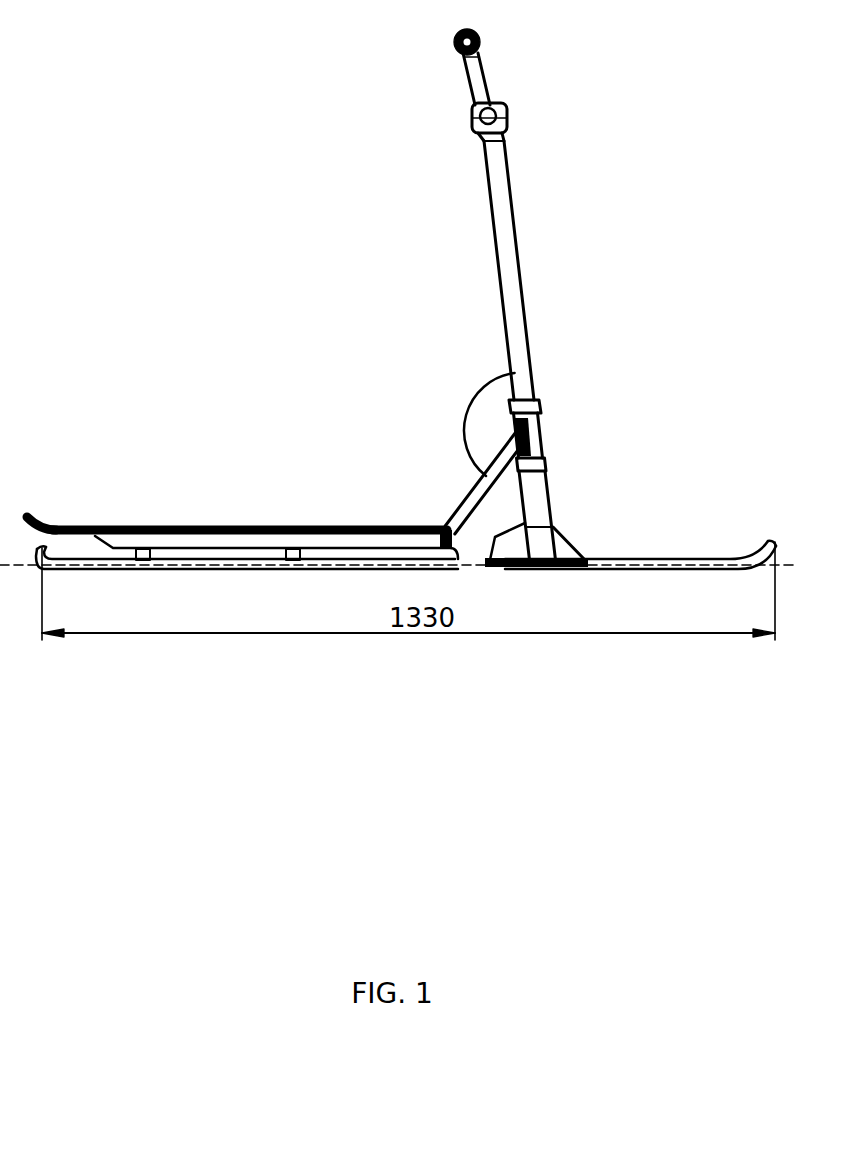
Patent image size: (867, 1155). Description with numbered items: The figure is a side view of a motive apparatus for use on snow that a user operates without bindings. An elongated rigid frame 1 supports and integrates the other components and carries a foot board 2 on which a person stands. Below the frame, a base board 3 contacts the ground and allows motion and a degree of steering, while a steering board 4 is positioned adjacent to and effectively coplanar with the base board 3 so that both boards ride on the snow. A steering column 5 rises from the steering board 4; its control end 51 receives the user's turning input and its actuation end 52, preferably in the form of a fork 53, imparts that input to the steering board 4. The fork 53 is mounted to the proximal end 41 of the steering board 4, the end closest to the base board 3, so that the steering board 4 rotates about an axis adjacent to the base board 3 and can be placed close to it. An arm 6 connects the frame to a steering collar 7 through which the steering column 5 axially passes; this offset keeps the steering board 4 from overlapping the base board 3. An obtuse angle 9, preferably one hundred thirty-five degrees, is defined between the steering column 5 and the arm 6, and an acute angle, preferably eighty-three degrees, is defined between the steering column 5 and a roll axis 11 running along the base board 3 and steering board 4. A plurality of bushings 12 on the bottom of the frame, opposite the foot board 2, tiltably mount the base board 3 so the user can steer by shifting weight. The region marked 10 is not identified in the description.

The elongated rigid frame 1 is at (240, 541).
The foot board 2 is at (78, 528).
The base board 3 is at (78, 571).
The steering board 4 is at (720, 562).
The steering column 5 is at (510, 276).
The arm 6 is at (470, 500).
The steering collar 7 is at (535, 436).
The obtuse angle 9 is at (505, 377).
The pole base bracket 10 is at (495, 531).
The roll axis 11 is at (195, 562).
The bushings 12 is at (145, 568).
The proximal end of the steering board 41 is at (528, 580).
The control end 51 is at (445, 106).
The actuation end 52 is at (567, 463).
The fork 53 is at (537, 503).